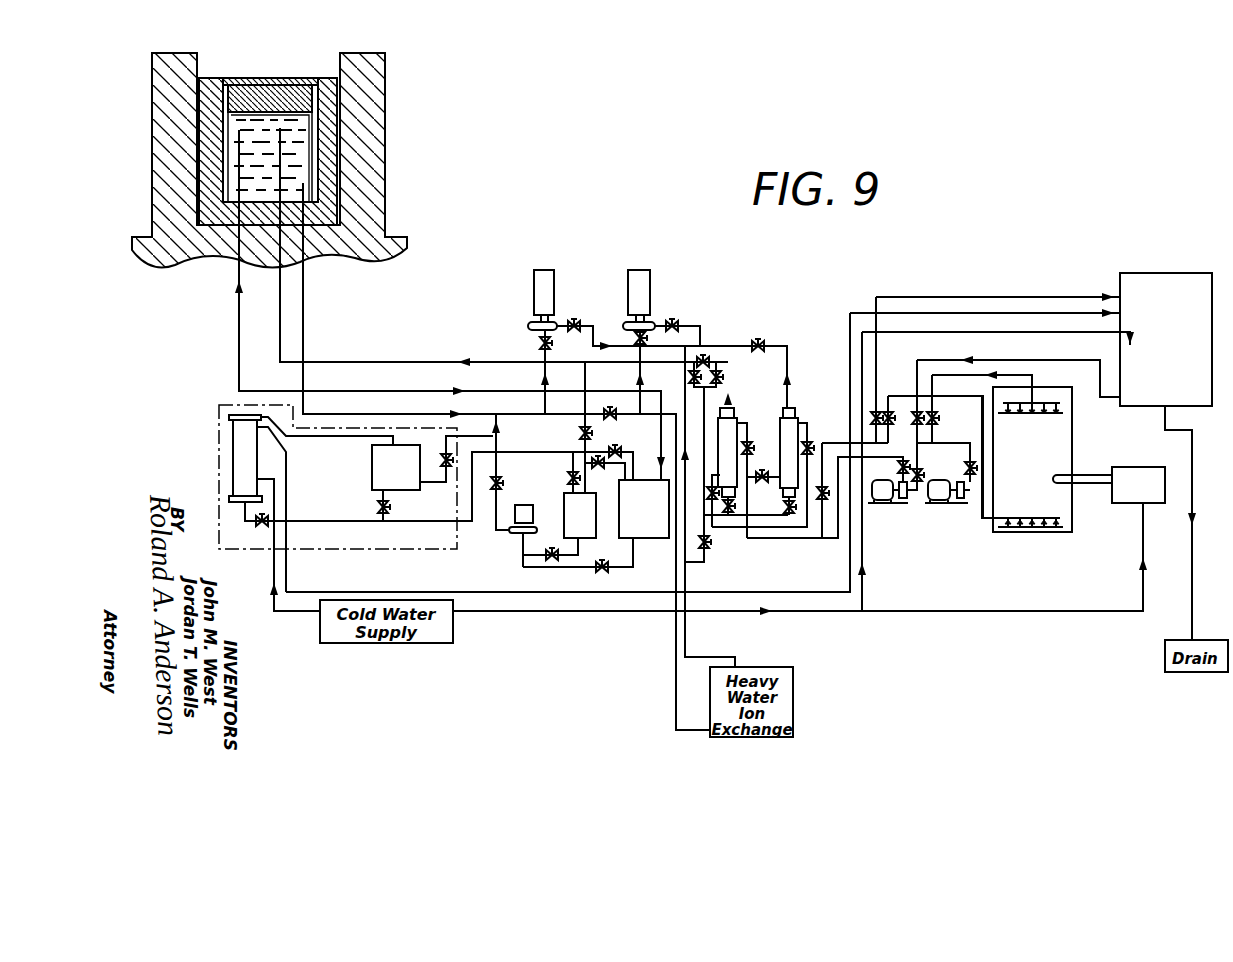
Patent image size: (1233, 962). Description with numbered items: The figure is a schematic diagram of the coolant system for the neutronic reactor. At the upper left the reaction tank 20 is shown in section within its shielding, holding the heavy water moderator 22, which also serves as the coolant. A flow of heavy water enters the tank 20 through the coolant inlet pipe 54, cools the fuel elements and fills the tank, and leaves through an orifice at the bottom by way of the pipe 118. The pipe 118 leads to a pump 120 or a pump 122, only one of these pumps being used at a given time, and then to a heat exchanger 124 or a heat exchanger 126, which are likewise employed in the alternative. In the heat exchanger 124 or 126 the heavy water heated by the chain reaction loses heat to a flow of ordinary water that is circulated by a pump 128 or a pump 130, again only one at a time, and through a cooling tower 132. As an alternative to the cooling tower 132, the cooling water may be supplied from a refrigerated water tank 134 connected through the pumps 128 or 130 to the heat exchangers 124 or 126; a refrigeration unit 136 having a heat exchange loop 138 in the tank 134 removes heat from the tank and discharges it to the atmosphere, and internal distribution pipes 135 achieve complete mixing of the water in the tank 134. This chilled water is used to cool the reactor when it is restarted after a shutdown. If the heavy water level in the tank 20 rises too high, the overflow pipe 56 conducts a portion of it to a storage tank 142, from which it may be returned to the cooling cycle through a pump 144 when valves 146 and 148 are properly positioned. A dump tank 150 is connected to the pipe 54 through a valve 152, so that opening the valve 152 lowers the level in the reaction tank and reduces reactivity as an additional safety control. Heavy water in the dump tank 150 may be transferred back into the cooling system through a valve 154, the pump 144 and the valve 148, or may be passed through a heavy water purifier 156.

The tank 20 is at (310, 140).
The heavy water moderator 22 is at (240, 143).
The coolant inlet pipe 54 is at (280, 330).
The overflow pipe 56 is at (239, 330).
The pipe 118 is at (308, 297).
The pump 120 is at (553, 310).
The pump 122 is at (648, 310).
The heat exchanger 124 is at (730, 408).
The heat exchanger 126 is at (781, 428).
The pump 128 is at (884, 498).
The pump 130 is at (943, 498).
The cooling tower 132 is at (1190, 317).
The refrigerated water tank 134 is at (1050, 465).
The internal distribution pipes 135 is at (1052, 414).
The refrigeration unit 136 is at (1137, 500).
The heat exchange loop 138 is at (1085, 476).
The storage tank 142 is at (662, 526).
The pump 144 is at (542, 500).
The valve 146 is at (614, 562).
The valve 148 is at (500, 488).
The dump tank 150 is at (592, 524).
The valve 152 is at (580, 434).
The valve 154 is at (558, 550).
The heavy water purifier 156 is at (314, 545).